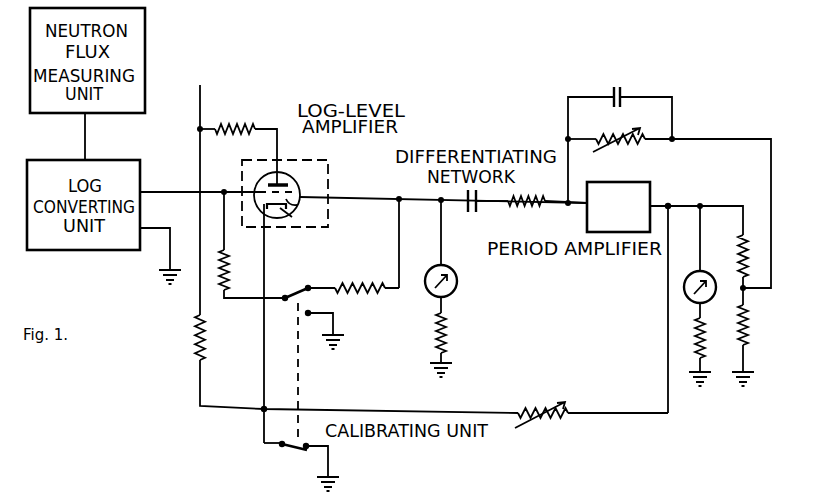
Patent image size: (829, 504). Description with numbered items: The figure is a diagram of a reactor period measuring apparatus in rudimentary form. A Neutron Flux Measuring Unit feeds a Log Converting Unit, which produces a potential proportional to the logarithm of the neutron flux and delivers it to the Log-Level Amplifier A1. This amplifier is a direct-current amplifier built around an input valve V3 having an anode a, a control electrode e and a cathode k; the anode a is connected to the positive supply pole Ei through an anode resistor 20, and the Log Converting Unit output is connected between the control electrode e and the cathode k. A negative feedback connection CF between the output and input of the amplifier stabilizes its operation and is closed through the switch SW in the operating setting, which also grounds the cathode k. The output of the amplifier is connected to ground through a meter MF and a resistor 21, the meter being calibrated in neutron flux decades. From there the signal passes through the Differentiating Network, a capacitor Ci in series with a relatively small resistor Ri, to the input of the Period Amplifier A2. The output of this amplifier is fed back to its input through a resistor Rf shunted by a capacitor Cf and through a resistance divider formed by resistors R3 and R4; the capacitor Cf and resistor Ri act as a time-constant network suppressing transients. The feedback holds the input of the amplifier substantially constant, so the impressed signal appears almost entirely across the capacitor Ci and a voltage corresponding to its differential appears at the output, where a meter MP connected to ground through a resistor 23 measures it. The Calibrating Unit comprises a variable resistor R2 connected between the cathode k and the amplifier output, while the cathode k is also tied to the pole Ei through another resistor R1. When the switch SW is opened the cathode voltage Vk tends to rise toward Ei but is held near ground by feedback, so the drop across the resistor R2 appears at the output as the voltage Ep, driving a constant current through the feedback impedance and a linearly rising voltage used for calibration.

The anode resistor 20 is at (238, 119).
The input valve V3 is at (288, 186).
The Log-Level Amplifier A1 is at (332, 168).
The anode a is at (265, 183).
The control electrode e is at (299, 203).
The cathode k is at (289, 213).
The negative feedback connection CF is at (346, 276).
The switch SW is at (299, 380).
The resistor R1 is at (195, 337).
The positive pole Ei is at (200, 91).
The cathode voltage Vk is at (262, 407).
The capacitor Ci is at (477, 212).
The resistor Ri is at (519, 208).
The meter MF is at (462, 270).
The resistor 21 is at (449, 336).
The capacitor Cf is at (619, 87).
The resistor Rf is at (608, 133).
The Period Amplifier A2 is at (618, 207).
The output voltage Ep is at (669, 203).
The resistor R3 is at (740, 239).
The meter MP is at (700, 272).
The resistor R4 is at (738, 314).
The resistor 23 is at (701, 350).
The variable resistor R2 is at (544, 405).